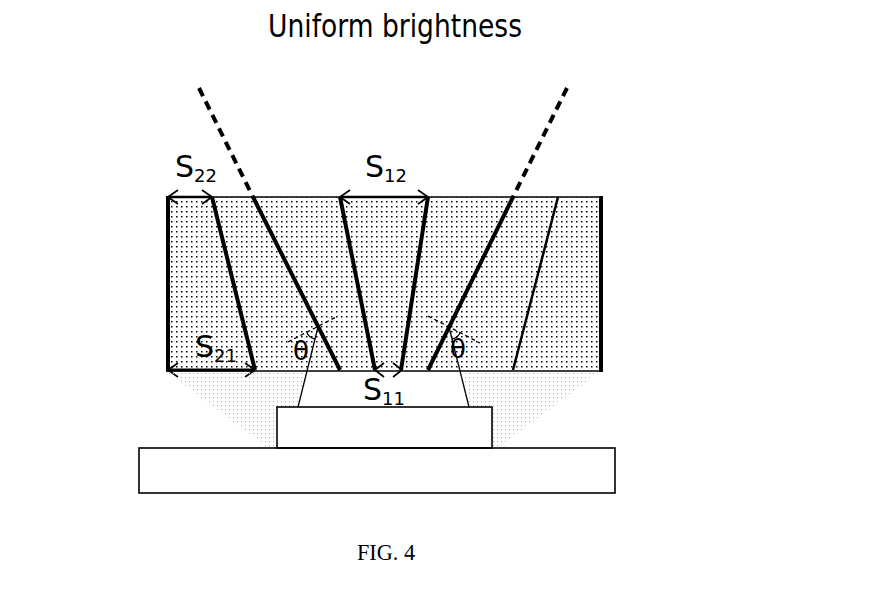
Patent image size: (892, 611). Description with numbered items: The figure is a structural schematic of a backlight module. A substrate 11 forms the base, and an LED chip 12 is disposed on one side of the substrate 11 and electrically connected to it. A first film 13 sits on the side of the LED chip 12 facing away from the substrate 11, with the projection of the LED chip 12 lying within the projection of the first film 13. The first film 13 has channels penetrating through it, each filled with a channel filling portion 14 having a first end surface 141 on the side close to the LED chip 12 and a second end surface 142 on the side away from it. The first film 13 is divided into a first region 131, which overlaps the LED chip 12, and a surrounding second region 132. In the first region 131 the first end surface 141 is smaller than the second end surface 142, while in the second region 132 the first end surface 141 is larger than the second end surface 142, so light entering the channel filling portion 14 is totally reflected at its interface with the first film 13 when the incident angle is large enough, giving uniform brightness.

The substrate 11 is at (601, 470).
The LED chip 12 is at (498, 424).
The first film 13 is at (613, 236).
The channel filling portion 14 is at (578, 311).
The first region 131 is at (520, 131).
The second region 132 is at (383, 229).
The first end surface 141 is at (148, 372).
The second end surface 142 is at (148, 204).